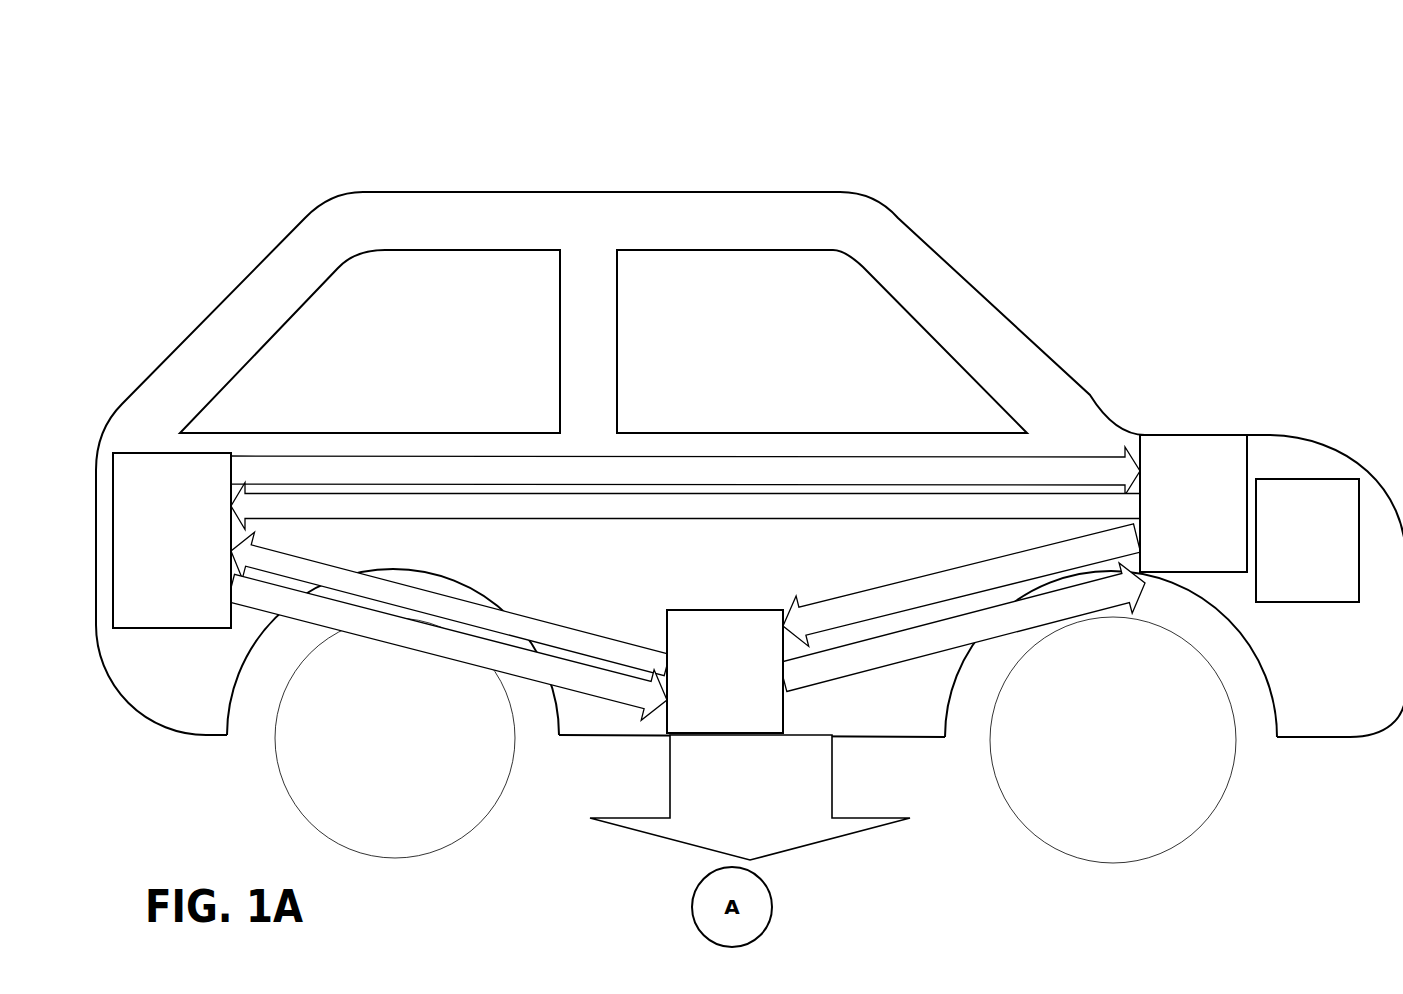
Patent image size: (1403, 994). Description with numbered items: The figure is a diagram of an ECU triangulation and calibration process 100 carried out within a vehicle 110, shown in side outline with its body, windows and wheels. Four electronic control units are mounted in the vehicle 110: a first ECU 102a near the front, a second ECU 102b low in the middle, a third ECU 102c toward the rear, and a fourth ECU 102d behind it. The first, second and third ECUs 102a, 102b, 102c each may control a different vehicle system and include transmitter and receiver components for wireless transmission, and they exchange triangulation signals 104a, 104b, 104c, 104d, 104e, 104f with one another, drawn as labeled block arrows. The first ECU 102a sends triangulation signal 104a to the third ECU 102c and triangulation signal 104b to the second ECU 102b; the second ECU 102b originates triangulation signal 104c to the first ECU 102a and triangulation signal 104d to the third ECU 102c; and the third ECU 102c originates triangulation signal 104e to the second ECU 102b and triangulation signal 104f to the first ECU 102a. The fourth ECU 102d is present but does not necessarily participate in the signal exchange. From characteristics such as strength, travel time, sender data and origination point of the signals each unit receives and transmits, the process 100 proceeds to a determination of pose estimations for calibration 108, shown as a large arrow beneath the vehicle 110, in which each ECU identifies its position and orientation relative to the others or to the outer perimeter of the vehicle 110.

The ECU triangulation and calibration process 100 is at (267, 56).
The vehicle 110 is at (595, 192).
The first ECU 102a is at (172, 540).
The second ECU 102b is at (725, 671).
The third ECU 102c is at (1193, 503).
The fourth ECU 102d is at (1307, 540).
The triangulation signal 104a is at (773, 456).
The triangulation signal 104b is at (583, 692).
The triangulation signal 104c is at (553, 620).
The triangulation signal 104d is at (946, 700).
The triangulation signal 104e is at (886, 588).
The triangulation signal 104f is at (733, 520).
The determination of pose estimations for calibration 108 is at (750, 797).